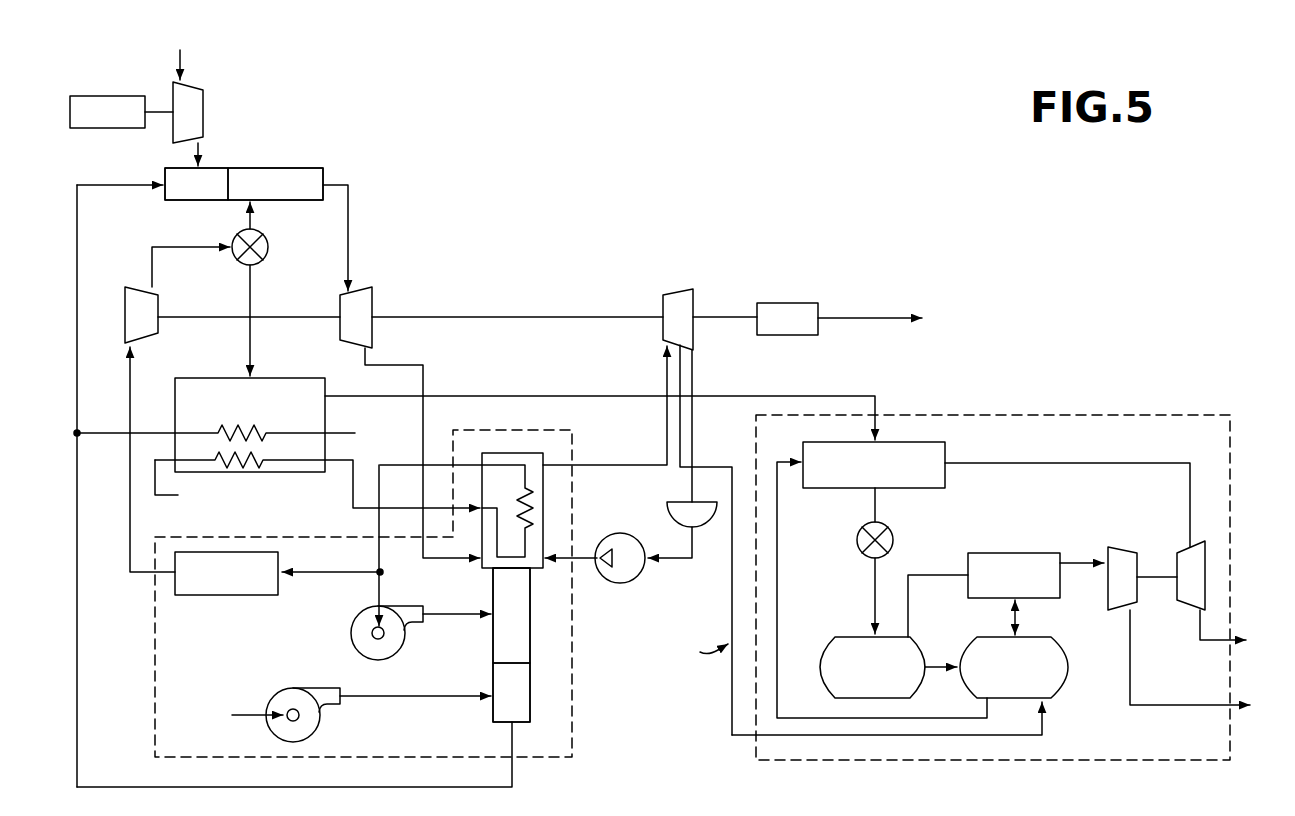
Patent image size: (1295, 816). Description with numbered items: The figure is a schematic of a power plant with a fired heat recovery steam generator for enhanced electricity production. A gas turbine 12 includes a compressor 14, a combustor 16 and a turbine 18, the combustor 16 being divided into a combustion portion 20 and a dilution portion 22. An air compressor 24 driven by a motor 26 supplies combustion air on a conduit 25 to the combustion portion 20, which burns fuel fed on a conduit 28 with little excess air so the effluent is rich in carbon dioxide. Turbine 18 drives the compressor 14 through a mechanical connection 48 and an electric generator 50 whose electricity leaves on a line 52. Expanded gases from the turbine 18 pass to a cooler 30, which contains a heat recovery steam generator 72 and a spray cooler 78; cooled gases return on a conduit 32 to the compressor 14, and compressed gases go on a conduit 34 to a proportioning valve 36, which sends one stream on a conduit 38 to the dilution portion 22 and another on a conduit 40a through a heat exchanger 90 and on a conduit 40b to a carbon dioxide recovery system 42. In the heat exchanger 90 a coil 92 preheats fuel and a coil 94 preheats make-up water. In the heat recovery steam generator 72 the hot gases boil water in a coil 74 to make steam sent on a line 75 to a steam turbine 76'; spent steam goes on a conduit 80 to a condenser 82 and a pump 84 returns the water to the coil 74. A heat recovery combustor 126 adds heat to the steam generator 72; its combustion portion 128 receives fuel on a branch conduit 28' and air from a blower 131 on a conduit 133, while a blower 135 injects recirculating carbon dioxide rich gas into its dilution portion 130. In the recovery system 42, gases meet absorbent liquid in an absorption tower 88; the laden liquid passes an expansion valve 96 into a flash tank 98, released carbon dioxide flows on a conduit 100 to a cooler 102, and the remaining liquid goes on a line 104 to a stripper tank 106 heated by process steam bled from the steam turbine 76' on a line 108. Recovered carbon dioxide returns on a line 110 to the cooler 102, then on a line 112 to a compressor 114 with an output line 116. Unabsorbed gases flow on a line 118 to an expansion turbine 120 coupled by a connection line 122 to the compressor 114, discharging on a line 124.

The gas turbine 12 is at (402, 194).
The compressor 14 is at (124, 295).
The combustor 16 is at (239, 166).
The turbine 18 is at (374, 290).
The combustion portion 20 is at (170, 200).
The dilution portion 22 is at (312, 165).
The air compressor 24 is at (206, 100).
The conduit 25 is at (205, 143).
The motor 26 is at (120, 94).
The conduit 28 is at (120, 470).
The branch conduit 28' is at (294, 754).
The cooler 30 is at (237, 663).
The conduit 32 is at (130, 492).
The conduit 34 is at (152, 247).
The proportioning valve 36 is at (270, 248).
The conduit 38 is at (258, 220).
The conduit 40a is at (252, 341).
The conduit 40b is at (537, 395).
The carbon dioxide recovery system 42 is at (1105, 465).
The mechanical connection 48 is at (295, 316).
The electric generator 50 is at (810, 293).
The line 52 is at (878, 317).
The heat recovery steam generator 72 is at (482, 570).
The coil 74 is at (519, 493).
The line 75 is at (665, 427).
The steam turbine 76' is at (687, 301).
The spray cooler 78 is at (280, 594).
The conduit 80 is at (695, 372).
The condenser 82 is at (700, 526).
The pump 84 is at (638, 576).
The absorption tower 88 is at (922, 489).
The heat exchanger 90 is at (220, 378).
The coil 92 is at (208, 433).
The coil 94 is at (280, 463).
The expansion valve 96 is at (857, 540).
The flash tank 98 is at (835, 637).
The conduit 100 is at (940, 574).
The cooler 102 is at (1020, 543).
The line 104 is at (941, 662).
The stripper tank 106 is at (1060, 697).
The line 108 is at (730, 691).
The line 110 is at (1020, 616).
The line 112 is at (1076, 560).
The compressor 114 is at (1122, 548).
The output line 116 is at (1192, 705).
The line 118 is at (1068, 464).
The expansion turbine 120 is at (1212, 531).
The connection line 122 is at (1160, 573).
The line 124 is at (1200, 641).
The heat recovery combustor 126 is at (543, 698).
The combustion portion 128 is at (491, 722).
The dilution portion 130 is at (491, 646).
The blower 131 is at (305, 690).
The conduit 133 is at (352, 700).
The blower 135 is at (352, 637).